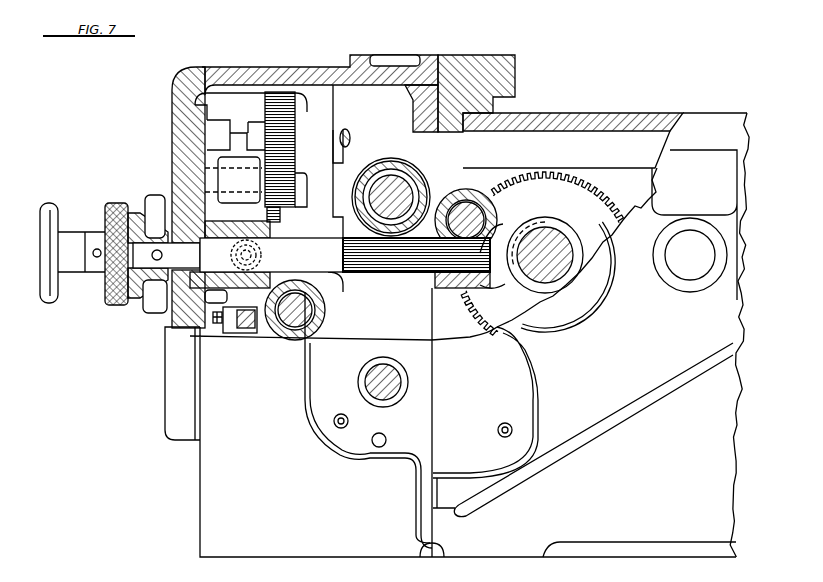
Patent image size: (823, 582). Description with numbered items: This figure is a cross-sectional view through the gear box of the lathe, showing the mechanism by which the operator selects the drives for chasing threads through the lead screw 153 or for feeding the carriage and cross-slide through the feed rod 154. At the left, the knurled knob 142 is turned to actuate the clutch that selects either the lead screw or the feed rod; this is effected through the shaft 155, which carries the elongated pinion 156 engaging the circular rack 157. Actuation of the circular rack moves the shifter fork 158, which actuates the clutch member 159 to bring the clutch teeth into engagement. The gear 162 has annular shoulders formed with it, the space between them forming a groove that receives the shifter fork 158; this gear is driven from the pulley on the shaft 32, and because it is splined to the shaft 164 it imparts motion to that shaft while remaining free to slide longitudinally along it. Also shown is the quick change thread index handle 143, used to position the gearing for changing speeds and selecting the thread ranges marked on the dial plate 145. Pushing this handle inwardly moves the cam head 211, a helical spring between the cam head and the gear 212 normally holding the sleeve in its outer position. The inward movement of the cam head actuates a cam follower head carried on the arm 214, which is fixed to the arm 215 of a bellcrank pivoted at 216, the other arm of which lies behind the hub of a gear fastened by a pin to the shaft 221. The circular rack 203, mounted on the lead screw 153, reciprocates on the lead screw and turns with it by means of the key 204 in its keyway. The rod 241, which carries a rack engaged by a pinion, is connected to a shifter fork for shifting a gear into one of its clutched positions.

The shaft 32 is at (677, 268).
The knurled knob 142 is at (108, 300).
The quick change thread index handle 143 is at (54, 210).
The dial plate 145 is at (174, 128).
The lead screw 153 is at (424, 198).
The feed rod 154 is at (395, 372).
The shaft 155 is at (330, 264).
The elongated pinion 156 is at (405, 272).
The circular rack 157 is at (468, 208).
The shifter fork 158 is at (503, 222).
The clutch member 159 is at (575, 238).
The gear 162 is at (618, 204).
The shaft 164 is at (547, 277).
The circular rack 203 is at (395, 148).
The key 204 is at (393, 225).
The cam head 211 is at (238, 255).
The gear 212 is at (272, 212).
The arm 214 is at (252, 252).
The arm 215 is at (250, 210).
The pivot 216 is at (213, 180).
The shaft 221 is at (340, 128).
The rod 241 is at (300, 325).